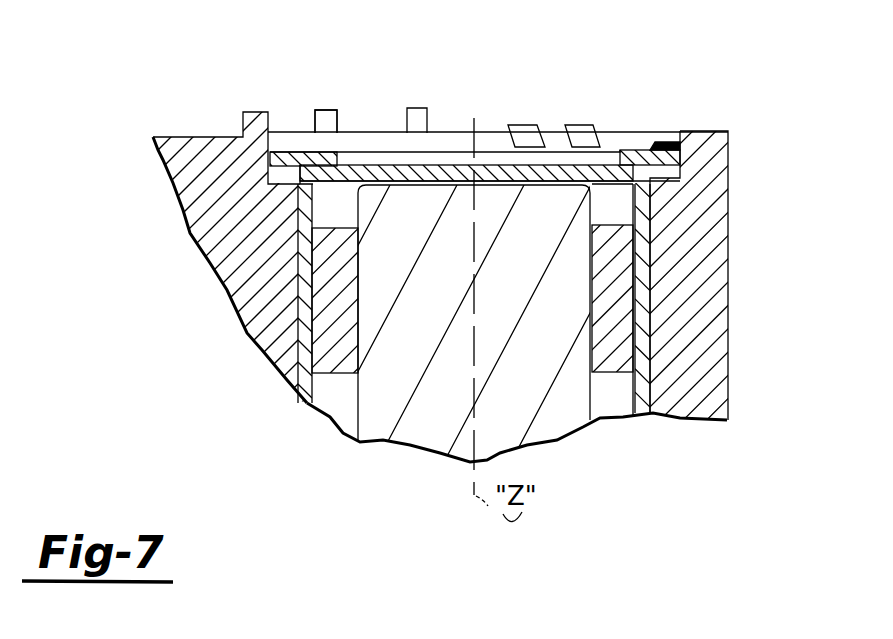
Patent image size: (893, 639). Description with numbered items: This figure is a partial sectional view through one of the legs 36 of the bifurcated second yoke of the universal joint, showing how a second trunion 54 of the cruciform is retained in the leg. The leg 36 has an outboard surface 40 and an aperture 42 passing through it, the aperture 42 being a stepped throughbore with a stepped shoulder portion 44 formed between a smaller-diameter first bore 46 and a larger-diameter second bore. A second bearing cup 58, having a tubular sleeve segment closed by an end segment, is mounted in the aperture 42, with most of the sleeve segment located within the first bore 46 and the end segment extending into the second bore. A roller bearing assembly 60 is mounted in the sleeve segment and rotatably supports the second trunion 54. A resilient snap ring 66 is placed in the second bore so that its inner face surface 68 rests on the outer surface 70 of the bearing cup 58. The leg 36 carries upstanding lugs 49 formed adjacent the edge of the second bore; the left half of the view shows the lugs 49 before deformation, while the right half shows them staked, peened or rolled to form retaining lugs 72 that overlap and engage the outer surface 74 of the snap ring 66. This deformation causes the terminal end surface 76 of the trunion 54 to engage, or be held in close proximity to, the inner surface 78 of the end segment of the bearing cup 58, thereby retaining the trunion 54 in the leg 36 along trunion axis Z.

The leg 36 is at (697, 227).
The outboard surface 40 is at (180, 136).
The aperture 42 is at (462, 150).
The stepped shoulder portion 44 is at (270, 133).
The first bore 46 is at (300, 393).
The lug 49 is at (242, 112).
The second trunion 54 is at (428, 413).
The second bearing cup 58 is at (304, 262).
The roller bearing assembly 60 is at (613, 343).
The snap ring 66 is at (315, 137).
The inner face surface 68 is at (288, 184).
The outer surface 70 is at (587, 163).
The retaining lug 72 is at (522, 130).
The outer surface 74 is at (343, 135).
The terminal end surface 76 is at (488, 177).
The inner surface 78 is at (407, 186).